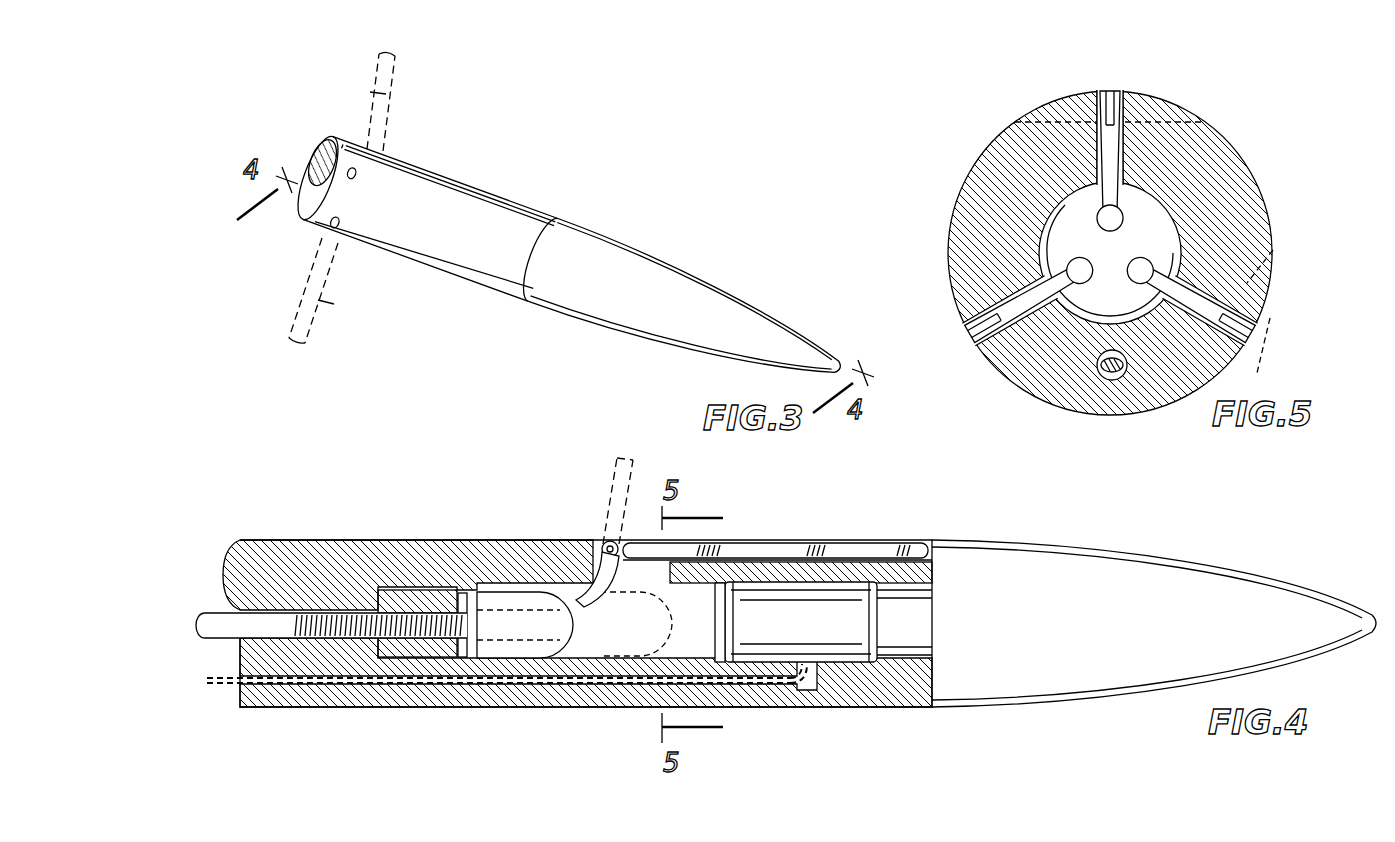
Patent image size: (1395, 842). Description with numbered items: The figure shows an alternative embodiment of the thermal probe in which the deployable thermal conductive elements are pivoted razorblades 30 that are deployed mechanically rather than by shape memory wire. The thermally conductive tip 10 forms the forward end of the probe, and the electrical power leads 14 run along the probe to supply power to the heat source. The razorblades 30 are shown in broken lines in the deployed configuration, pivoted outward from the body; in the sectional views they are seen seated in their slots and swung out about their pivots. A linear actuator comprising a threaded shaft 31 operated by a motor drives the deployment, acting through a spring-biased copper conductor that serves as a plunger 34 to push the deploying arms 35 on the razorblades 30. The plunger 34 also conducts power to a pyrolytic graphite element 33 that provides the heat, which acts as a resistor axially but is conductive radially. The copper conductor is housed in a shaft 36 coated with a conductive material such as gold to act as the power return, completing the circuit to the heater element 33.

In FIG. 3, the thermally conductive tip 10 is at (690, 297).
In FIG. 4, the thermally conductive tip 10 is at (1207, 587).
In FIG. 5, the electrical power leads 14 is at (1102, 380).
In FIG. 4, the electrical power leads 14 is at (337, 687).
In FIG. 3, the pivoted razorblades 30 is at (463, 187).
In FIG. 5, the pivoted razorblades 30 is at (1110, 92).
In FIG. 4, the pivoted razorblades 30 is at (617, 460).
In FIG. 4, the threaded shaft 31 is at (392, 612).
In FIG. 4, the pyrolytic graphite element 33 is at (830, 632).
In FIG. 5, the plunger 34 is at (1062, 223).
In FIG. 4, the plunger 34 is at (533, 603).
In FIG. 5, the deploying arms 35 is at (1097, 112).
In FIG. 4, the deploying arms 35 is at (598, 553).
In FIG. 3, the shaft 36 is at (400, 217).
In FIG. 5, the shaft 36 is at (1017, 163).
In FIG. 4, the shaft 36 is at (808, 690).